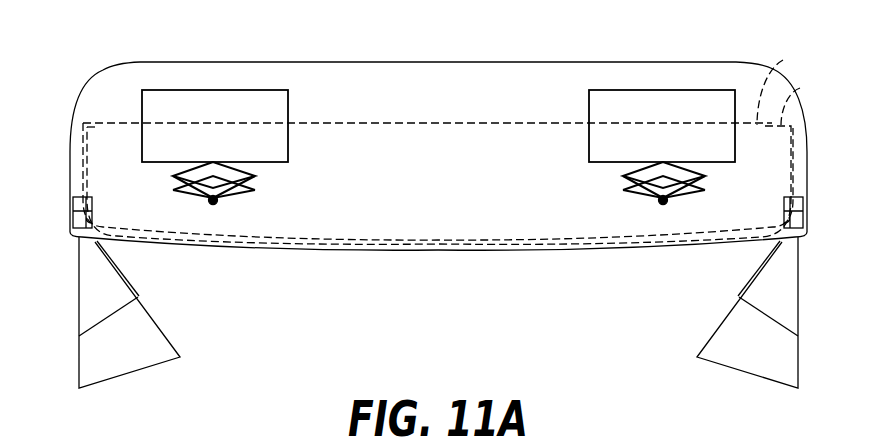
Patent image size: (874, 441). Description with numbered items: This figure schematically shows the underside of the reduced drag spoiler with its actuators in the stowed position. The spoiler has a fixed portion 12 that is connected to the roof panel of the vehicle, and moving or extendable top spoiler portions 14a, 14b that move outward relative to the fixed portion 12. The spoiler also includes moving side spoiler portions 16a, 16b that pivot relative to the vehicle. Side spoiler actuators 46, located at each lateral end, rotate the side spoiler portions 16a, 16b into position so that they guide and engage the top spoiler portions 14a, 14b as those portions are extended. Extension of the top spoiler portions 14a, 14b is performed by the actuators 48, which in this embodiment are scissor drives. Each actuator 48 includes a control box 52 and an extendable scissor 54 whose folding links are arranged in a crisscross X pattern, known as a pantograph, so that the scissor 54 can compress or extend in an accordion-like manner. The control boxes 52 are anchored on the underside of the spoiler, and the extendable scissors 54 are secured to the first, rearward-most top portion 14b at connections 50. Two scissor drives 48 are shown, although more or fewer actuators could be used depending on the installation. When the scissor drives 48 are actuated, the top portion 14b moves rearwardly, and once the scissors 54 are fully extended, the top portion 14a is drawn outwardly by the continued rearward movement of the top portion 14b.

The fixed portion 12 is at (424, 82).
The top spoiler portion 14a is at (800, 88).
The top spoiler portion 14b is at (783, 60).
The side spoiler portion 16a is at (93, 288).
The side spoiler portion 16b is at (780, 295).
The side spoiler actuator 46 is at (78, 197).
The actuator 48 is at (189, 103).
The connection 50 is at (213, 201).
The control box 52 is at (635, 103).
The extendable scissor 54 is at (250, 181).